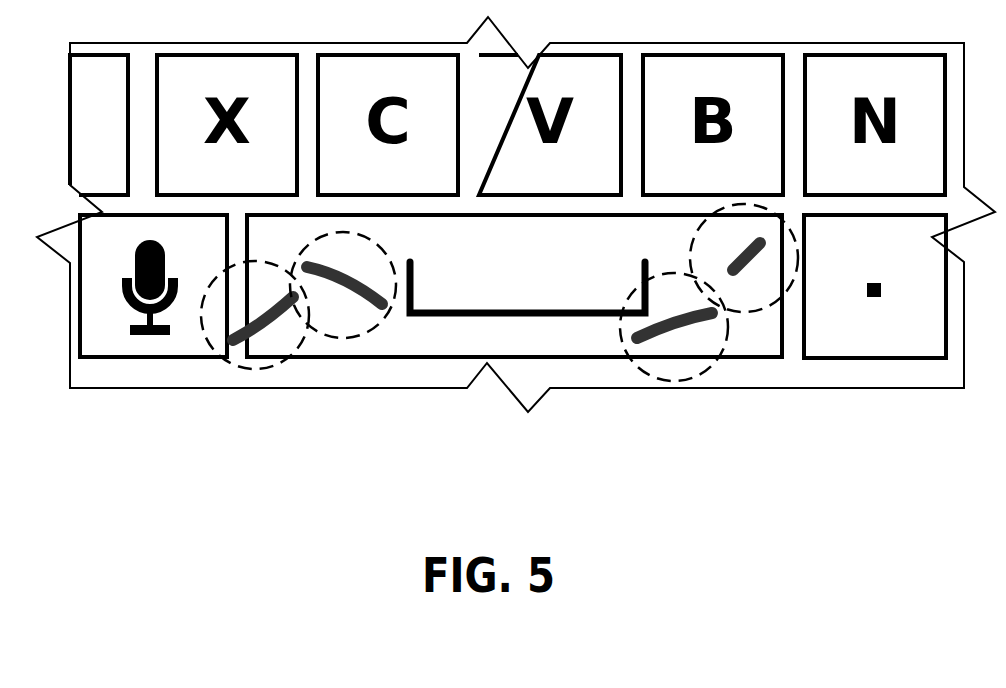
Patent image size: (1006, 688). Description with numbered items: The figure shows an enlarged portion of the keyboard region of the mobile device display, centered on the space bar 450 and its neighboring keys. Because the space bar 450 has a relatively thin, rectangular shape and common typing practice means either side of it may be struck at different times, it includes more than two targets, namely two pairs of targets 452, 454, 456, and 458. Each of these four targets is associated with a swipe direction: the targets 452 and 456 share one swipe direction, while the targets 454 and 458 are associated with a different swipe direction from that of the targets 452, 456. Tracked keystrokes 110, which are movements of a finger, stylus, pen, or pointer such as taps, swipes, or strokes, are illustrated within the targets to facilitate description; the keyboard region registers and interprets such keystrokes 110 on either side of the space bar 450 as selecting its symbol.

The keystroke 110 is at (737, 253).
The space bar 450 is at (562, 327).
The target 452 is at (673, 381).
The target 454 is at (768, 330).
The target 456 is at (285, 362).
The target 458 is at (378, 325).